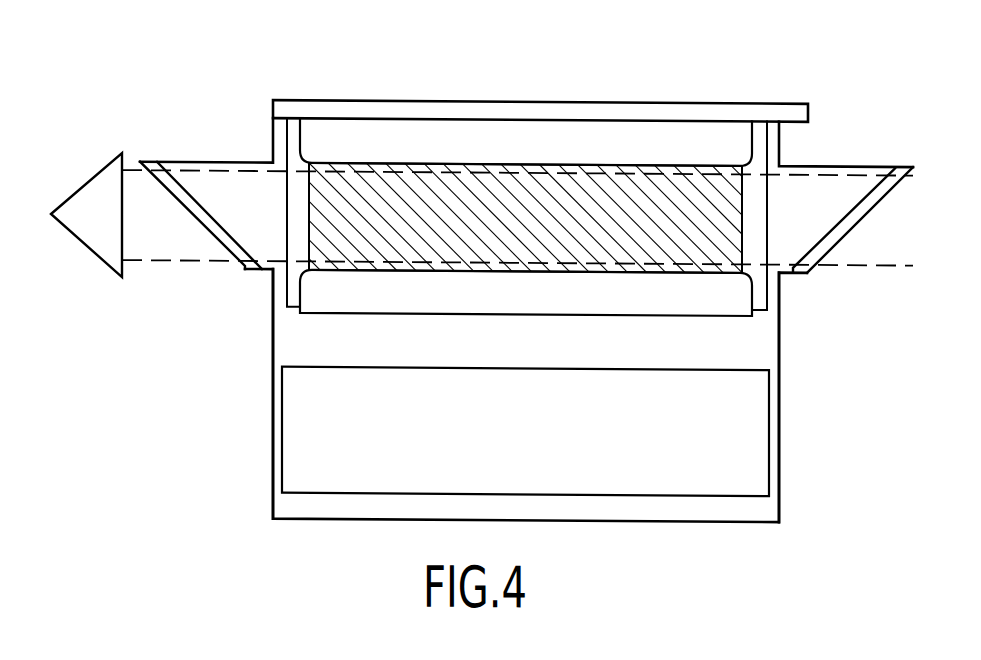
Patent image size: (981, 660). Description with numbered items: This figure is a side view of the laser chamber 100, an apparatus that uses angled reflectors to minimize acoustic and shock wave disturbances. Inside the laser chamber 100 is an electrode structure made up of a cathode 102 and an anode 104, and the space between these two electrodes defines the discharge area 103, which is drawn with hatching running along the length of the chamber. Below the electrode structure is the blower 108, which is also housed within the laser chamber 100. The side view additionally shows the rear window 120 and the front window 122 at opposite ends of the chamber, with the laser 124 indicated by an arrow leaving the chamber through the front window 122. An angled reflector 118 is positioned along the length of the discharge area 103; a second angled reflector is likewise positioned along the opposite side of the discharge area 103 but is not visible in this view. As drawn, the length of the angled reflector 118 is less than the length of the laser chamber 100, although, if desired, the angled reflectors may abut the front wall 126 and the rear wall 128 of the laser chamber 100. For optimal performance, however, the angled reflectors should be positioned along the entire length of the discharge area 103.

The laser chamber 100 is at (840, 98).
The cathode 102 is at (535, 152).
The discharge area 103 is at (706, 191).
The anode 104 is at (535, 302).
The blower 108 is at (535, 446).
The angled reflector 118 is at (283, 290).
The rear window 120 is at (846, 233).
The front window 122 is at (208, 236).
The laser 124 is at (125, 163).
The front wall 126 is at (273, 436).
The rear wall 128 is at (780, 440).